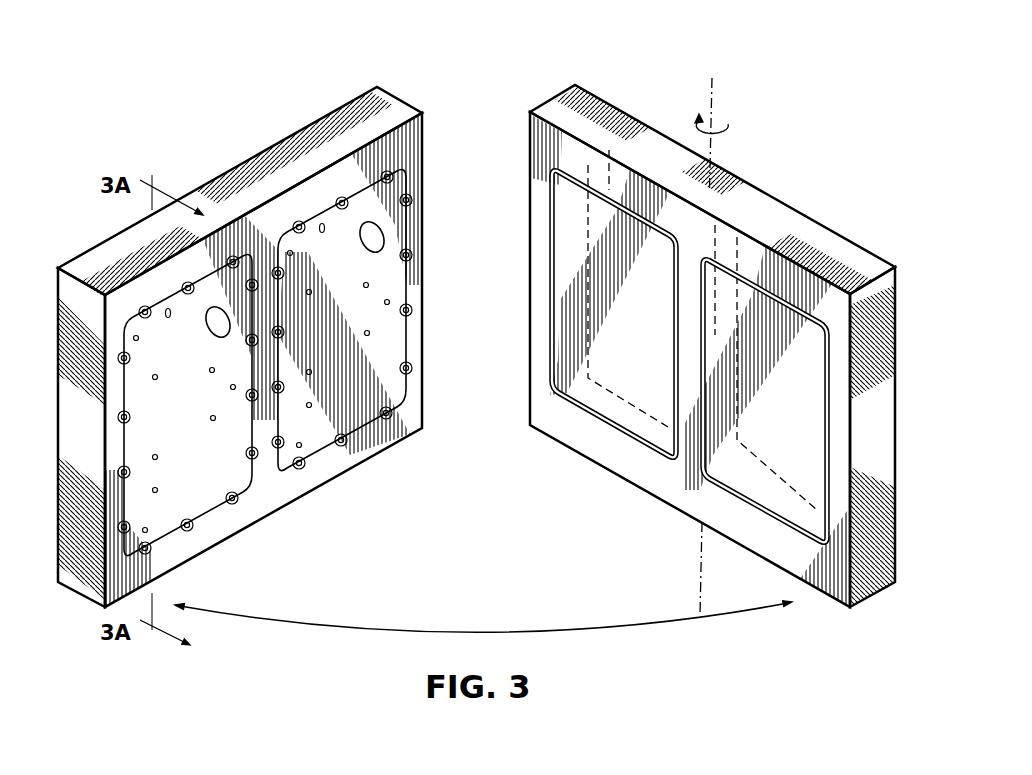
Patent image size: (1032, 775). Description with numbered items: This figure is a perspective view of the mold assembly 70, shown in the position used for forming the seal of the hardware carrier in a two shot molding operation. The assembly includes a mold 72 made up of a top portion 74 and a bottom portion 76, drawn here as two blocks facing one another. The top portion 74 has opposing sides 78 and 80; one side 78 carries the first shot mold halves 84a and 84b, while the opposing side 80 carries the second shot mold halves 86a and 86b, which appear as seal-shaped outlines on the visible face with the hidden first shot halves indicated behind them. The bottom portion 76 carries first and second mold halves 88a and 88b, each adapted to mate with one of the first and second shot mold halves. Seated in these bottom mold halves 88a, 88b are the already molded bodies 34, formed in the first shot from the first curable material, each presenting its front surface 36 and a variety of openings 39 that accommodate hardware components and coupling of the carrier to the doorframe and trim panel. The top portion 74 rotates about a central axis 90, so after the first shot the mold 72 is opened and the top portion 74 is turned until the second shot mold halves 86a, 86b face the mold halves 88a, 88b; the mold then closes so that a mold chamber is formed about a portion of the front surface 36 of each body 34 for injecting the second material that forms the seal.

The mold assembly 70 is at (187, 50).
The mold 72 is at (326, 643).
The top portion 74 is at (793, 227).
The bottom portion 76 is at (262, 172).
The side 78 is at (896, 302).
The opposing side 80 is at (640, 470).
The first shot mold half 84a is at (741, 446).
The first shot mold half 84b is at (592, 372).
The second shot mold half 86a is at (597, 413).
The second shot mold half 86b is at (778, 518).
The mold half 88a is at (312, 437).
The mold half 88b is at (205, 498).
The body 34 is at (393, 288).
The front surface 36 is at (203, 405).
The openings 39 is at (383, 237).
The central axis 90 is at (717, 92).